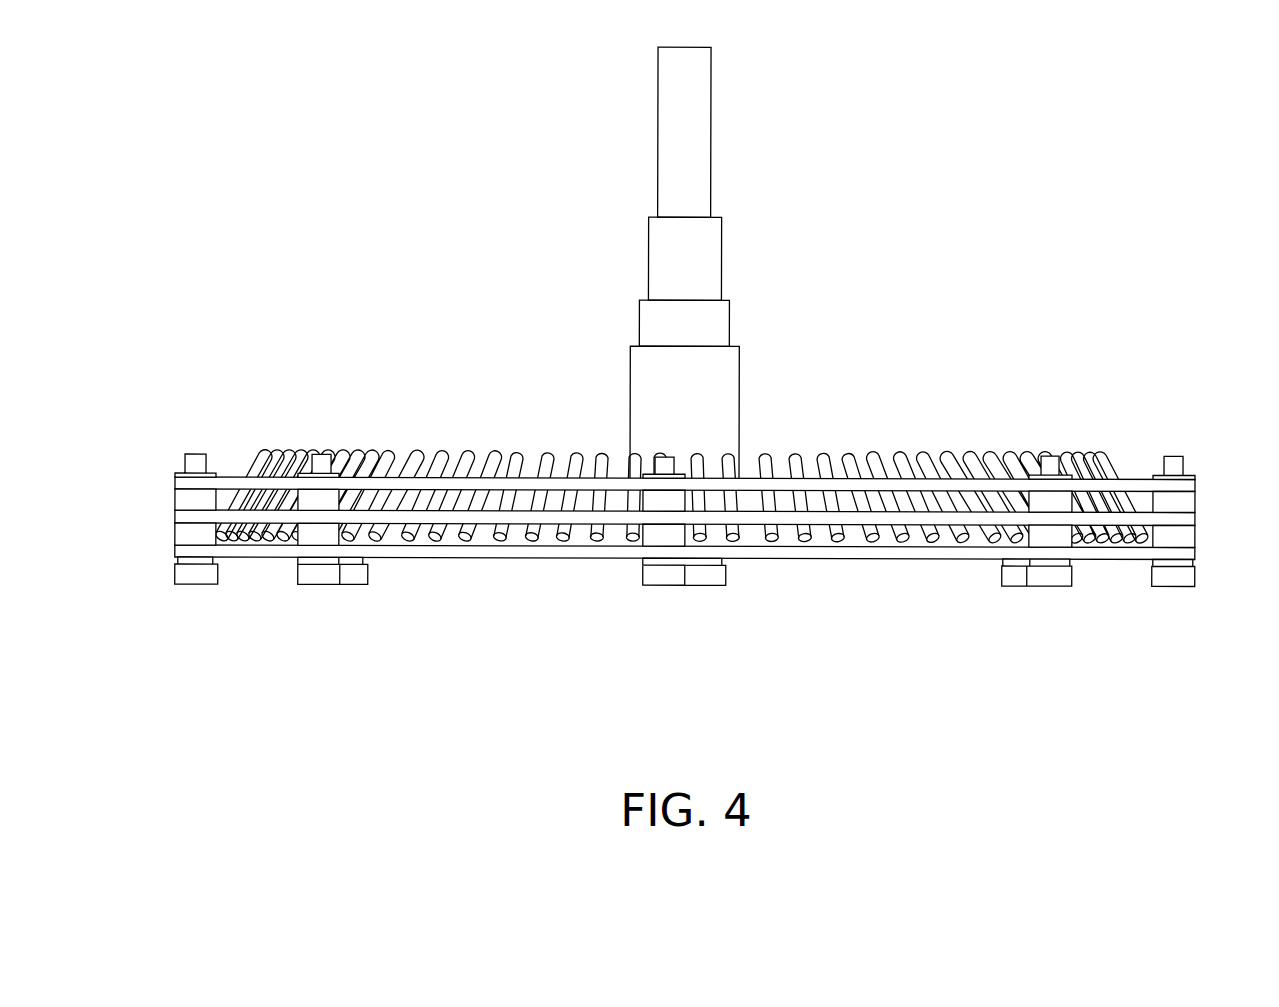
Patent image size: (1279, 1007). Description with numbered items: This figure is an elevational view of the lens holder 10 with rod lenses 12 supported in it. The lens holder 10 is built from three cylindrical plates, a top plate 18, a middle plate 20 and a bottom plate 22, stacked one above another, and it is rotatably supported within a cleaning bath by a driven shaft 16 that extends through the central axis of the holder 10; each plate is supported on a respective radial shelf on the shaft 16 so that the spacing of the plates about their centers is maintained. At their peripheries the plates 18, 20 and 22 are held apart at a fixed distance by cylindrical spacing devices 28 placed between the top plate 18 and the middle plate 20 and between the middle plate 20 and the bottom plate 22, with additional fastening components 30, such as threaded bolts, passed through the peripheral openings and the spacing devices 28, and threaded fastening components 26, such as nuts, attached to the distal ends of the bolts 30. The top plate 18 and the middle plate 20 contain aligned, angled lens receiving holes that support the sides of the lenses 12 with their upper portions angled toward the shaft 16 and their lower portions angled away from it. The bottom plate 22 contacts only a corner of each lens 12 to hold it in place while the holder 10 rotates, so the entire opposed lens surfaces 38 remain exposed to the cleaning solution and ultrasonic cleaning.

The lens holder 10 is at (470, 200).
The rod lenses 12 is at (395, 449).
The driven shaft 16 is at (718, 260).
The top plate 18 is at (1196, 489).
The middle plate 20 is at (1196, 518).
The bottom plate 22 is at (1185, 553).
The threaded fastening components 26 is at (196, 453).
The spacing devices 28 is at (178, 497).
The additional fastening components 30 is at (196, 585).
The lens surfaces 38 is at (465, 541).